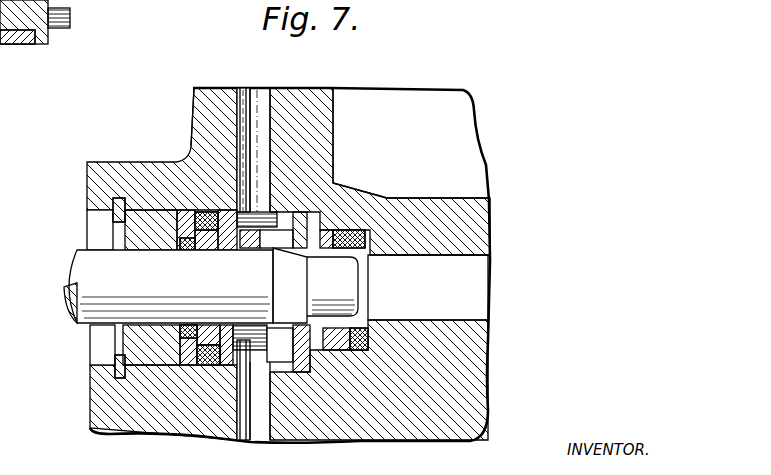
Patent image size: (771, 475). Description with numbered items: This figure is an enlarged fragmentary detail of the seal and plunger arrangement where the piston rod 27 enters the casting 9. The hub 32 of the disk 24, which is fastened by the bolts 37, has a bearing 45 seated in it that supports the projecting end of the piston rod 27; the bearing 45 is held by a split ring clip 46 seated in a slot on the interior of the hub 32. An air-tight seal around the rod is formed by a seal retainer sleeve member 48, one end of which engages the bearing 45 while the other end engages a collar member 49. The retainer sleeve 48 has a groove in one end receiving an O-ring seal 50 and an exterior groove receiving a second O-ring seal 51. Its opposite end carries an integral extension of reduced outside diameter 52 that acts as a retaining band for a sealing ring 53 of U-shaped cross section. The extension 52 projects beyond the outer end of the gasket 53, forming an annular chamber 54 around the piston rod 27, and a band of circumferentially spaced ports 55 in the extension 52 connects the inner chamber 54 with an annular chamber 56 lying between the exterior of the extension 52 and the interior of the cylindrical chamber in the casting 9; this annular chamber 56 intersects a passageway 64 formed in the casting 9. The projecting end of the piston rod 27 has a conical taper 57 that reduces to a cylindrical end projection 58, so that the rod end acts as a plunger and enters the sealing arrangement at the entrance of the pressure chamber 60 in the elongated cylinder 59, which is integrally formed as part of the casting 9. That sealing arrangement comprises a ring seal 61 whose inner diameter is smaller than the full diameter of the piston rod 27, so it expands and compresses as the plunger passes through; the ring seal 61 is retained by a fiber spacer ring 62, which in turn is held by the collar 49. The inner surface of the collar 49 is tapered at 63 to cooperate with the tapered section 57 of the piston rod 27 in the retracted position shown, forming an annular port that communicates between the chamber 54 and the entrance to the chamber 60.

The casting 9 is at (500, 404).
The disk 24 is at (193, 92).
The piston rod 27 is at (78, 254).
The hub 32 is at (109, 161).
The bolts 37 is at (60, 28).
The bearing 45 is at (113, 345).
The split ring clip 46 is at (115, 365).
The seal retainer sleeve member 48 is at (190, 212).
The collar member 49 is at (335, 194).
The O-ring seal 50 is at (189, 324).
The second O-ring seal 51 is at (207, 212).
The integral extension of reduced outside diameter 52 is at (228, 390).
The sealing ring 53 is at (233, 325).
The annular chamber 54 is at (276, 326).
The ports 55 is at (292, 210).
The annular chamber 56 is at (240, 100).
The conical taper 57 is at (279, 324).
The cylindrical end projection 58 is at (341, 262).
The elongated cylinder 59 is at (490, 223).
The pressure chamber 60 is at (428, 287).
The ring seal 61 is at (352, 328).
The fiber spacer ring 62 is at (377, 197).
The tapered inner surface 63 is at (302, 324).
The passageway 64 is at (278, 87).